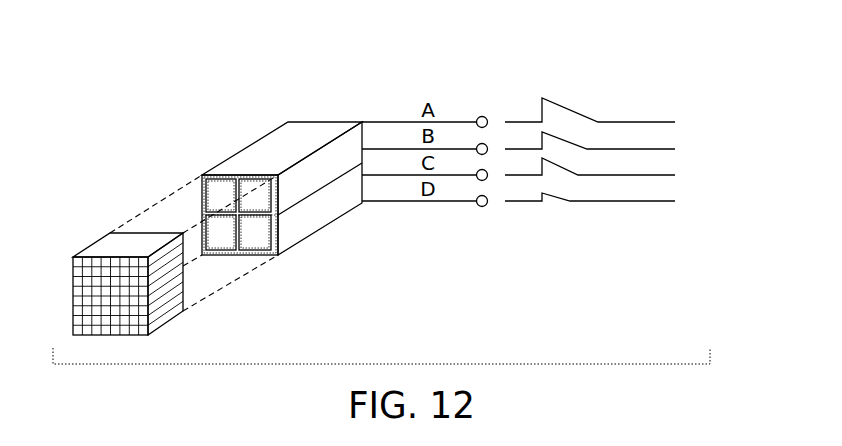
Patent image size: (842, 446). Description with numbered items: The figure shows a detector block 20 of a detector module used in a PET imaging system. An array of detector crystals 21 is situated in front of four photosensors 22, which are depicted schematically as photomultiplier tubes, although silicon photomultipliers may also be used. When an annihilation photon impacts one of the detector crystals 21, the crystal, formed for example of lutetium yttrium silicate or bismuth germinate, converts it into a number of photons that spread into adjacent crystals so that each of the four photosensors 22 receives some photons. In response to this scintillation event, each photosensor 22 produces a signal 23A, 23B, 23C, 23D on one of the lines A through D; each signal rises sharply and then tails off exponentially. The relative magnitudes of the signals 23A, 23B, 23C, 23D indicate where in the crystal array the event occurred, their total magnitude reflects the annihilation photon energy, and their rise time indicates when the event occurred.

The detector block 20 is at (221, 136).
The detector crystals 21 is at (73, 298).
The photosensors 22 is at (334, 178).
The signal 23A is at (622, 121).
The signal 23B is at (648, 149).
The signal 23C is at (648, 178).
The signal 23D is at (627, 206).